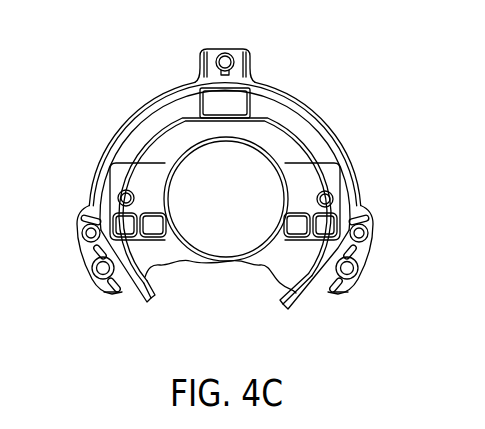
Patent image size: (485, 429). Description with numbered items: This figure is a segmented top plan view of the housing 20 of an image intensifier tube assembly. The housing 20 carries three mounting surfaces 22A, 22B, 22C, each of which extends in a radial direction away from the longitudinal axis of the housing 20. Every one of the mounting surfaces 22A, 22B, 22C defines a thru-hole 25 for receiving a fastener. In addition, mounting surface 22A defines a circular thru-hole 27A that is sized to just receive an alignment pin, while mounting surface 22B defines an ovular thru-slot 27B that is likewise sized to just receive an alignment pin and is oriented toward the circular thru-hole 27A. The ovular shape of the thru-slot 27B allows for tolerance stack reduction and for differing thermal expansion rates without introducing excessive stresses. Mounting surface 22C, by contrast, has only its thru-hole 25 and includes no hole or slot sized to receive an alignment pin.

The housing 20 is at (121, 71).
The mounting surface 22C is at (206, 50).
The thru-hole 25 is at (204, 55).
The circular thru-hole 27A is at (80, 233).
The ovular thru-slot 27B is at (370, 232).
The mounting surface 22A is at (80, 258).
The mounting surface 22B is at (370, 258).